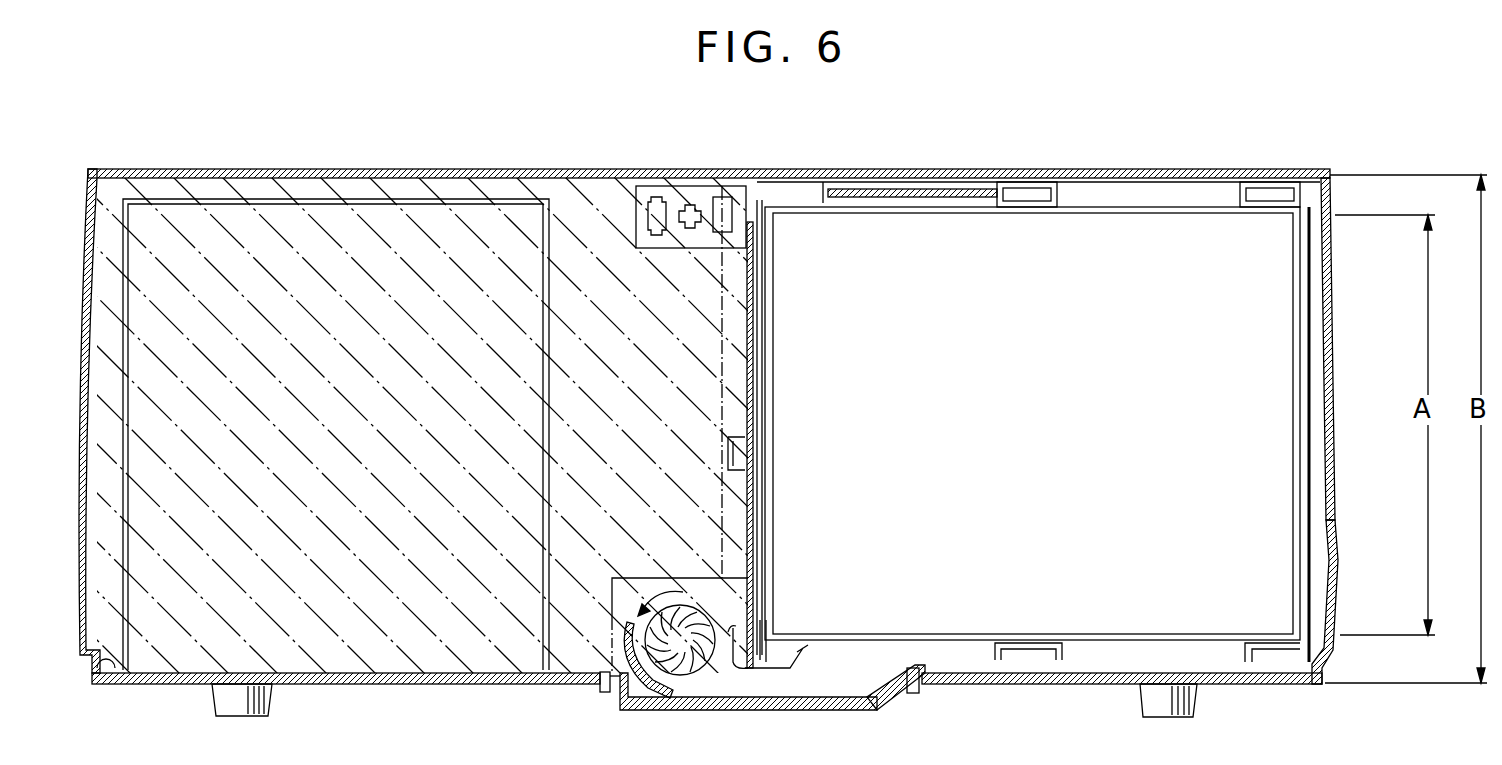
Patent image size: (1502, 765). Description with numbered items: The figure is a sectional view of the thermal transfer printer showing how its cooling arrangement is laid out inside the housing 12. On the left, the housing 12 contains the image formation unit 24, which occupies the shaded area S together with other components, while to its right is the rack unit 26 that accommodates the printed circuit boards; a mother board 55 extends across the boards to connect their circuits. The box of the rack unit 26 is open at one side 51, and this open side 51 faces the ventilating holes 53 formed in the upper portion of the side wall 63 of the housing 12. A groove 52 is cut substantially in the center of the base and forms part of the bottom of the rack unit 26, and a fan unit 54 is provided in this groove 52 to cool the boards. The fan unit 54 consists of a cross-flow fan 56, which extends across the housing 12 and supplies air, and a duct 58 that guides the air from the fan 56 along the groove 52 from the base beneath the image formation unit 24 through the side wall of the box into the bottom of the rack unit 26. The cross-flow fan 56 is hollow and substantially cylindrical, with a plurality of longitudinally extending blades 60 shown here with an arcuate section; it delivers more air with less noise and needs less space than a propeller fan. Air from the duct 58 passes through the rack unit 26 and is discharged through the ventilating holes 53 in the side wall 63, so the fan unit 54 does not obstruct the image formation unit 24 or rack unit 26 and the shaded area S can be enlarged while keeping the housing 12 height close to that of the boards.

The housing 12 is at (884, 169).
The image formation unit 24 is at (480, 218).
The rack unit 26 is at (1100, 235).
The open side 51 is at (1320, 292).
The ventilating hole 53 is at (1340, 341).
The mother board 55 is at (762, 386).
The side wall 63 is at (1340, 556).
The shaded area S is at (485, 660).
The blades 60 is at (670, 675).
The cross-flow fan 56 is at (700, 673).
The fan unit 54 is at (783, 710).
The duct 58 is at (877, 708).
The groove 52 is at (895, 695).